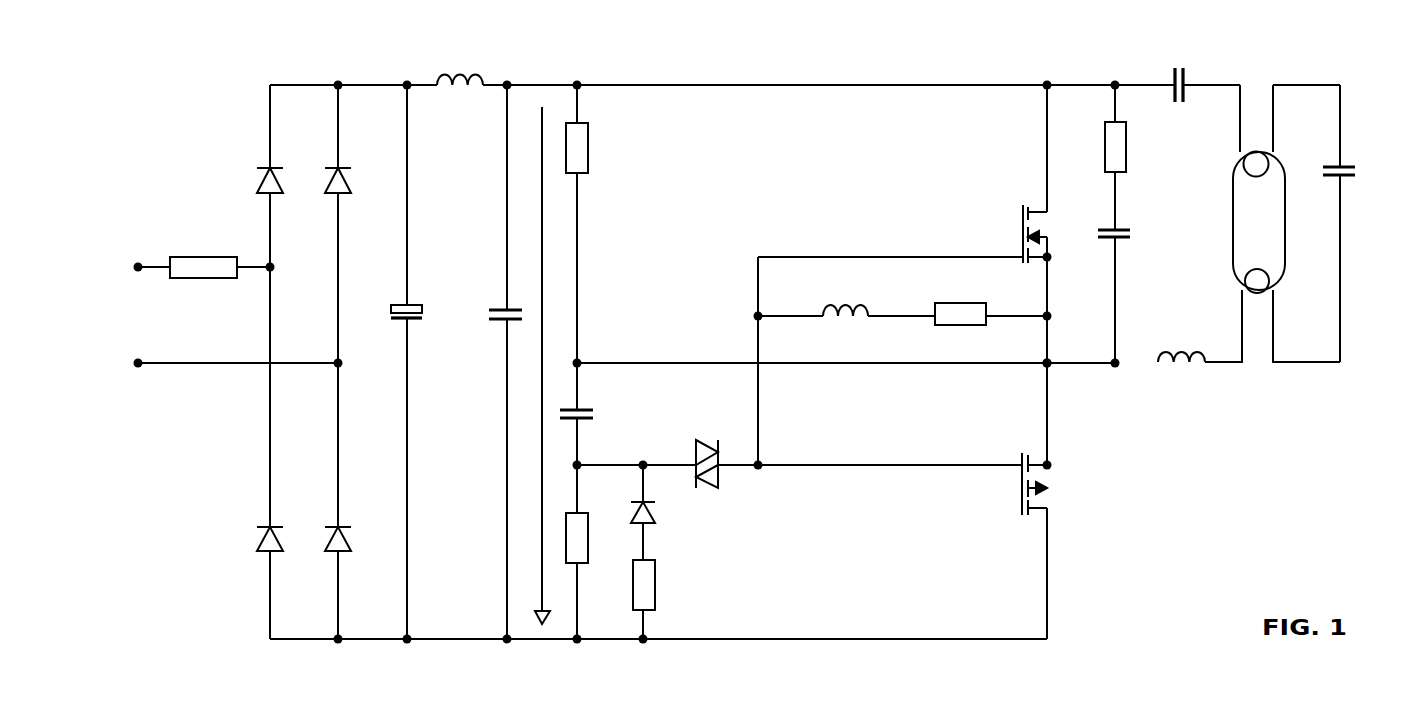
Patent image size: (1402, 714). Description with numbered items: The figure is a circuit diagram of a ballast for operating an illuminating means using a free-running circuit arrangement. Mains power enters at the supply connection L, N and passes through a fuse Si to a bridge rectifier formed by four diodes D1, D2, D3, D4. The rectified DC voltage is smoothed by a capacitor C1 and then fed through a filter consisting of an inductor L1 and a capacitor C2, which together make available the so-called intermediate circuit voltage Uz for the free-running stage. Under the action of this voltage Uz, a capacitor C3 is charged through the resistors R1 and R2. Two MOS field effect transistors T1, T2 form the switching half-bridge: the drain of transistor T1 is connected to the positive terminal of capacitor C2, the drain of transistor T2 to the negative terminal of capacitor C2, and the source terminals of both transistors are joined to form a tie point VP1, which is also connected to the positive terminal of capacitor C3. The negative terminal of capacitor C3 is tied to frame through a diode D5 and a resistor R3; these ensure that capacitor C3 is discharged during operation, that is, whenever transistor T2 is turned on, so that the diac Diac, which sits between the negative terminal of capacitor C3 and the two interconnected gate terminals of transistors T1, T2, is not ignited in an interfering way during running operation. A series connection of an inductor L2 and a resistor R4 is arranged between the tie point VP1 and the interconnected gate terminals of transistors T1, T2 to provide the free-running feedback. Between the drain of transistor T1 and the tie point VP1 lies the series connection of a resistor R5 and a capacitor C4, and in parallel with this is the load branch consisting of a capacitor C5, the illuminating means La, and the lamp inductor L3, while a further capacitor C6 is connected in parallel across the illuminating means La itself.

The supply connection L is at (150, 249).
The supply connection N is at (234, 345).
The fuse Si is at (220, 254).
The diode D1 is at (248, 182).
The diode D2 is at (359, 182).
The diode D3 is at (248, 540).
The diode D4 is at (359, 540).
The capacitor C1 is at (397, 362).
The capacitor C2 is at (492, 362).
The inductor L1 is at (460, 62).
The resistor R1 is at (595, 247).
The intermediate circuit voltage Uz is at (531, 365).
The capacitor C3 is at (597, 459).
The diac Diac is at (704, 446).
The diode D5 is at (666, 512).
The resistor R2 is at (596, 576).
The resistor R3 is at (667, 599).
The MOS field effect transistor T1 is at (1030, 217).
The inductor L2 is at (845, 296).
The resistor R4 is at (960, 298).
The tie point VP1 is at (1071, 345).
The MOS field effect transistor T2 is at (1028, 473).
The resistor R5 is at (1135, 147).
The capacitor C5 is at (1179, 67).
The capacitor C4 is at (1134, 232).
The illuminating means La is at (1259, 223).
The capacitor C6 is at (1355, 193).
The lamp inductor L3 is at (1181, 377).